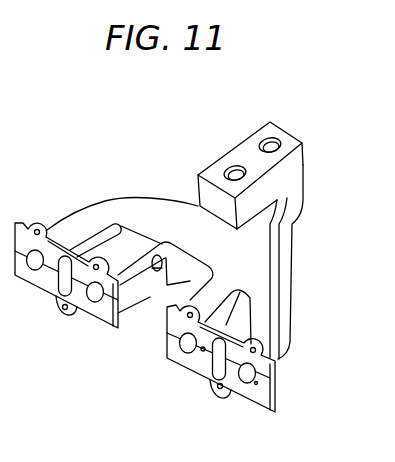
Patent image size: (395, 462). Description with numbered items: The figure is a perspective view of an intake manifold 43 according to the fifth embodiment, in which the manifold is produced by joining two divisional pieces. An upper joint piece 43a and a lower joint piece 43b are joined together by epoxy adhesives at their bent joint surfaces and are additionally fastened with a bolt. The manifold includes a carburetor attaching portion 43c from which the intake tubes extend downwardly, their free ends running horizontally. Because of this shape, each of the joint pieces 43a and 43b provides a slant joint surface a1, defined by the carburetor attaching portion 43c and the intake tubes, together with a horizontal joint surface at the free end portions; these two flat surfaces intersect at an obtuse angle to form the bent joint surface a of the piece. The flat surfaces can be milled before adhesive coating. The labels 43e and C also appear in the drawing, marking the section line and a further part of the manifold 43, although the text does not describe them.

The intake manifold 43 is at (307, 129).
The upper joint piece 43a is at (140, 198).
The lower joint piece 43b is at (290, 244).
The carburetor attaching portion 43c is at (237, 150).
The mounting plate 43e is at (72, 225).
The slant joint surface a1 is at (284, 305).
The bent joint surface a is at (203, 352).
The section line C- C is at (154, 255).